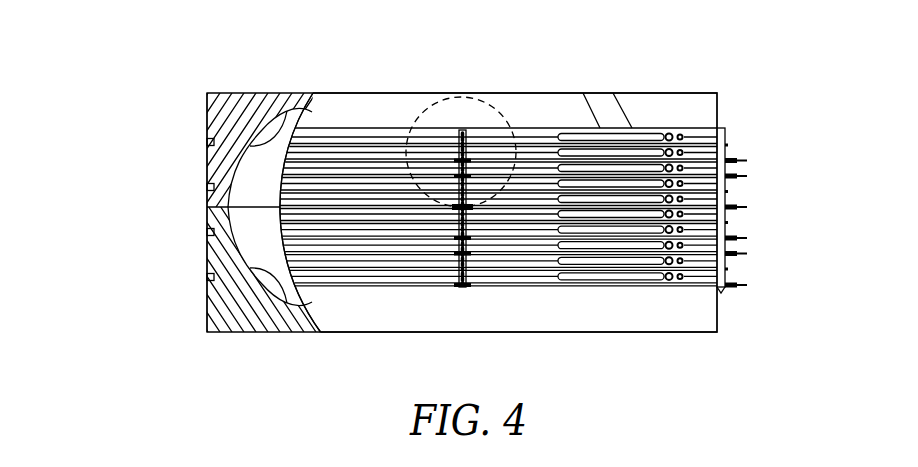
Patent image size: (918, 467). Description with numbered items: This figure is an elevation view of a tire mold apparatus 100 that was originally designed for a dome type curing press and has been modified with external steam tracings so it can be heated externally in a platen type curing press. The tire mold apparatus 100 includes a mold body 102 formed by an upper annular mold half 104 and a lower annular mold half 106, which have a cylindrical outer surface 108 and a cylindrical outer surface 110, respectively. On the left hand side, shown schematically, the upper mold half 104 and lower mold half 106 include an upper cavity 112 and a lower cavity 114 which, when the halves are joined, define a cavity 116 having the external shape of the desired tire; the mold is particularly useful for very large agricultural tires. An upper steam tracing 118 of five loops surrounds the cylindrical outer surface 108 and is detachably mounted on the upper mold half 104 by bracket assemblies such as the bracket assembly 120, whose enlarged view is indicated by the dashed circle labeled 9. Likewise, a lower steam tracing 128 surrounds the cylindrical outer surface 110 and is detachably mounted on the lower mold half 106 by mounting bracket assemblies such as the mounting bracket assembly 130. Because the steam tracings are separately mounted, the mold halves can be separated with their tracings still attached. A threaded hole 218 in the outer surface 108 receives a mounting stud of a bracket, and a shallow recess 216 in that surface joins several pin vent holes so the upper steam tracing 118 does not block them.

The tire mold apparatus 100 is at (733, 50).
The mold body 102 is at (264, 212).
The upper annular mold half 104 is at (207, 113).
The lower annular mold half 106 is at (207, 313).
The cylindrical outer surface 108 is at (718, 110).
The cylindrical outer surface 110 is at (718, 315).
The upper cavity 112 is at (286, 113).
The lower cavity 114 is at (287, 303).
The cavity 116 is at (277, 193).
The upper steam tracing 118 is at (760, 132).
The lower steam tracing 128 is at (760, 208).
The bracket assembly 120 is at (500, 118).
The mounting bracket assembly 130 is at (467, 287).
The shallow recess 216 is at (609, 107).
The threaded hole 218 is at (207, 277).
The detail region of FIG. 9 is at (418, 118).